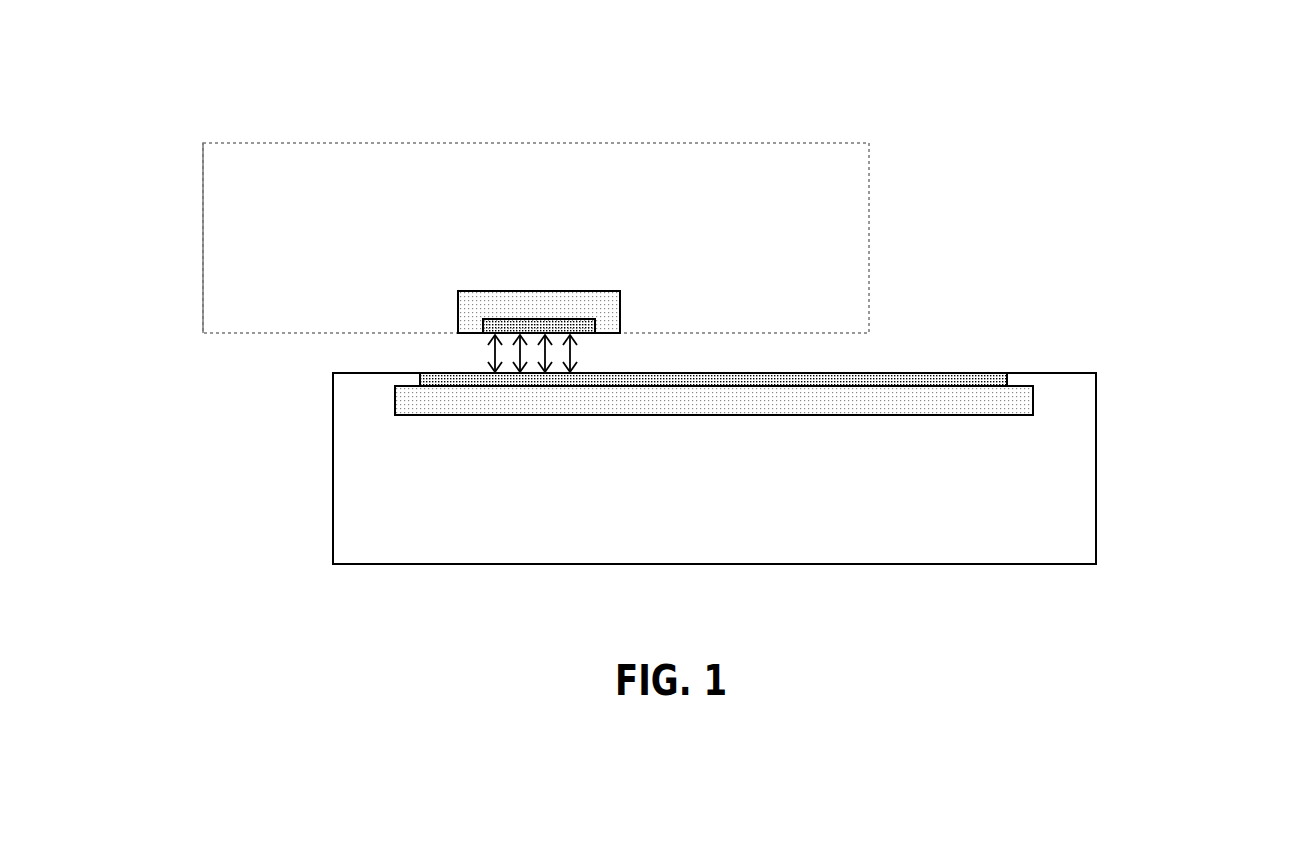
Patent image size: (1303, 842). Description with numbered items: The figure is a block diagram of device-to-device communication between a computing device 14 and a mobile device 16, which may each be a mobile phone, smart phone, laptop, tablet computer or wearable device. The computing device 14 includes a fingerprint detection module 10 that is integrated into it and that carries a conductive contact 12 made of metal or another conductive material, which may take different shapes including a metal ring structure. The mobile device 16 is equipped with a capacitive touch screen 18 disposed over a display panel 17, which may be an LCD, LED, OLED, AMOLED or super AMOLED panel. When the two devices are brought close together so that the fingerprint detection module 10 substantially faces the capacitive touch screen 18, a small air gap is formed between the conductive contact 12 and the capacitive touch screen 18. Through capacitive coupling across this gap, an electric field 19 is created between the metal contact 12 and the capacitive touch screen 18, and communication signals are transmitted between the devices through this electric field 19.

The fingerprint detection module 10 is at (530, 302).
The conductive contact 12 is at (500, 326).
The computing device 14 is at (765, 141).
The mobile device 16 is at (333, 498).
The display panel 17 is at (1023, 407).
The capacitive touch screen 18 is at (1000, 376).
The electric field 19 is at (578, 360).